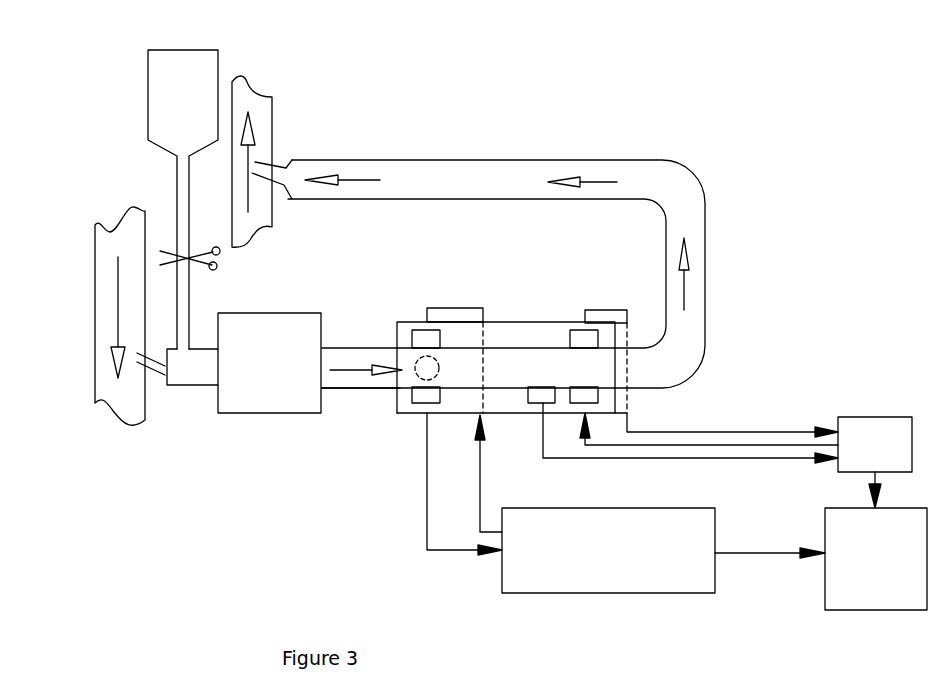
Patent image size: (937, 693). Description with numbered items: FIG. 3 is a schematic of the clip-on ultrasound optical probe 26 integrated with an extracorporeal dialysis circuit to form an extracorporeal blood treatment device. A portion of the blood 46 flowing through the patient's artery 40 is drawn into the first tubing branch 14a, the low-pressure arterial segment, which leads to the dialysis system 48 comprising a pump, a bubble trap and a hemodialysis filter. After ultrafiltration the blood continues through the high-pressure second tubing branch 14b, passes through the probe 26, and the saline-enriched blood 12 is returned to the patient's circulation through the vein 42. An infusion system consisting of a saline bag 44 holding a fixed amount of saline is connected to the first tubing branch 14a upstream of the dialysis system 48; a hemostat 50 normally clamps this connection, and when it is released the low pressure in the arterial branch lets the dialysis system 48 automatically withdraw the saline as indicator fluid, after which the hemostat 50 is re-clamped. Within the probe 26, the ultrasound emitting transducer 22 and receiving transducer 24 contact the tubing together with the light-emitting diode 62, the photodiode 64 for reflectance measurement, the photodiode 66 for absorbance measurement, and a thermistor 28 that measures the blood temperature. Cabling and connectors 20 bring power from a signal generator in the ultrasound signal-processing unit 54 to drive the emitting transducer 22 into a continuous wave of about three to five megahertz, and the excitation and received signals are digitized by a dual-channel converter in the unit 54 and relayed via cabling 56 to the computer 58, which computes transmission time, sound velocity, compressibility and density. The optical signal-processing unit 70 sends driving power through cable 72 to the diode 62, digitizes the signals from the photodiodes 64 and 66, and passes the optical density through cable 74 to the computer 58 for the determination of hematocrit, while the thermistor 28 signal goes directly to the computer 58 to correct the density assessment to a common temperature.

The saline-enriched blood 12 is at (340, 182).
The first tubing branch 14a is at (190, 388).
The second tubing branch 14b is at (378, 388).
The cabling and connectors 20 is at (427, 552).
The ultrasound emitting transducer 22 is at (428, 342).
The receiving transducer 24 is at (417, 400).
The clip-on ultrasound optical probe 26 is at (455, 415).
The thermistor 28 is at (413, 365).
The artery 40 is at (105, 247).
The vein 42 is at (247, 92).
The saline bag 44 is at (183, 199).
The blood 46 is at (118, 318).
The dialysis system 48 is at (269, 363).
The hemostat 50 is at (220, 265).
The ultrasound signal-processing unit 54 is at (608, 550).
The cabling 56 is at (758, 553).
The computer 58 is at (876, 559).
The light-emitting diode 62 is at (628, 400).
The photodiode for reflectance measurement 64 is at (513, 413).
The photodiode for absorbance measurement 66 is at (580, 335).
The optical signal-processing unit 70 is at (875, 444).
The cable 72 is at (652, 447).
The cable 74 is at (870, 495).